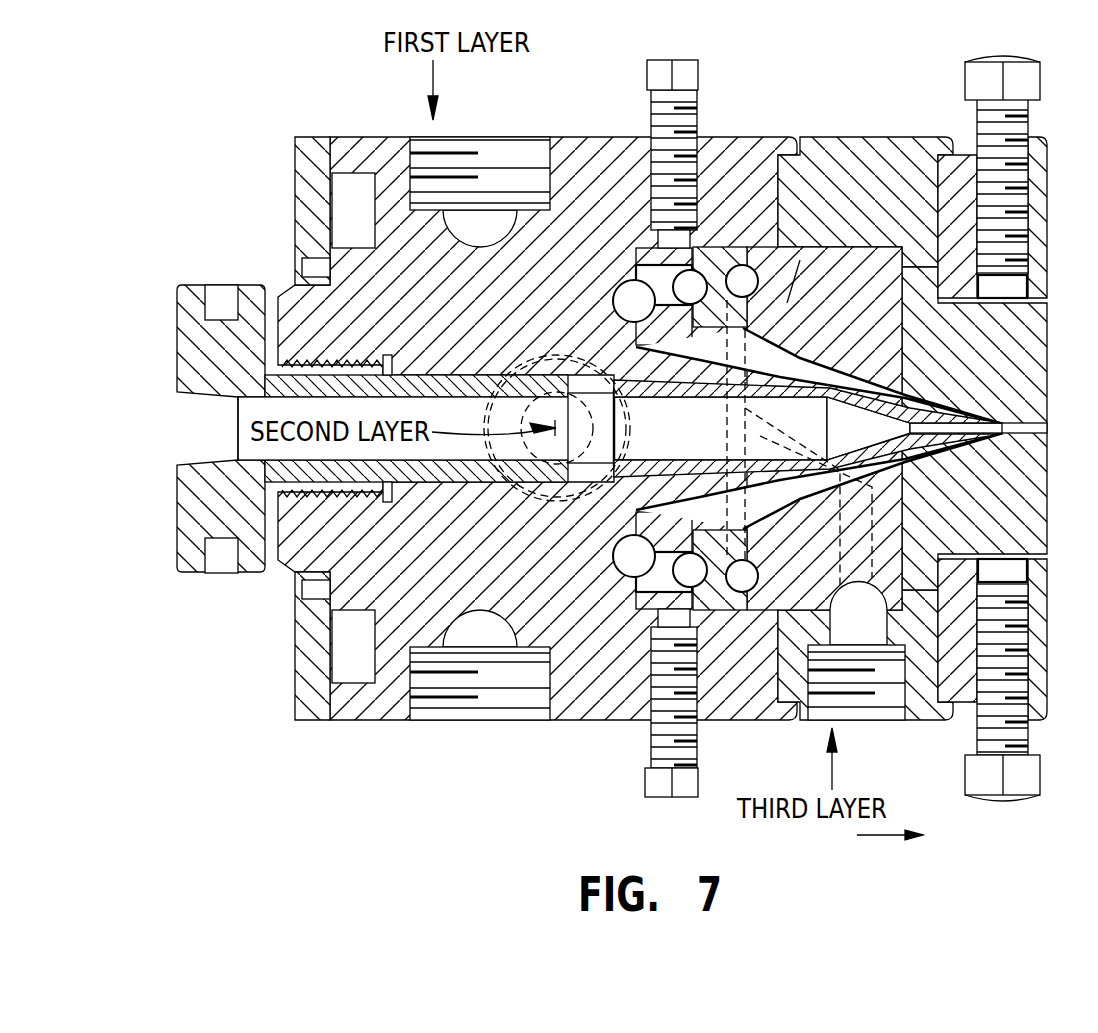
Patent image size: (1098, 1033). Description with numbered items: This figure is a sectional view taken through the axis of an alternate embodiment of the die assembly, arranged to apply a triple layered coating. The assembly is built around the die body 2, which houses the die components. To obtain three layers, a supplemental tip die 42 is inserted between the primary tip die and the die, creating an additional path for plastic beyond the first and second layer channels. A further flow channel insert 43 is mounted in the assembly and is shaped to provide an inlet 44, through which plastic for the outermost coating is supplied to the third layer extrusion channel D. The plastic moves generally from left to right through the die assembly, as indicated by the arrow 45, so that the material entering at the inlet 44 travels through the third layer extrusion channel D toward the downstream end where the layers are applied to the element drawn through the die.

The die body 2 is at (367, 137).
The supplemental tip die 42 is at (702, 250).
The flow channel insert 43 is at (920, 137).
The inlet 44 is at (860, 712).
The arrow 45 is at (863, 838).
The third layer extrusion channel D is at (800, 260).